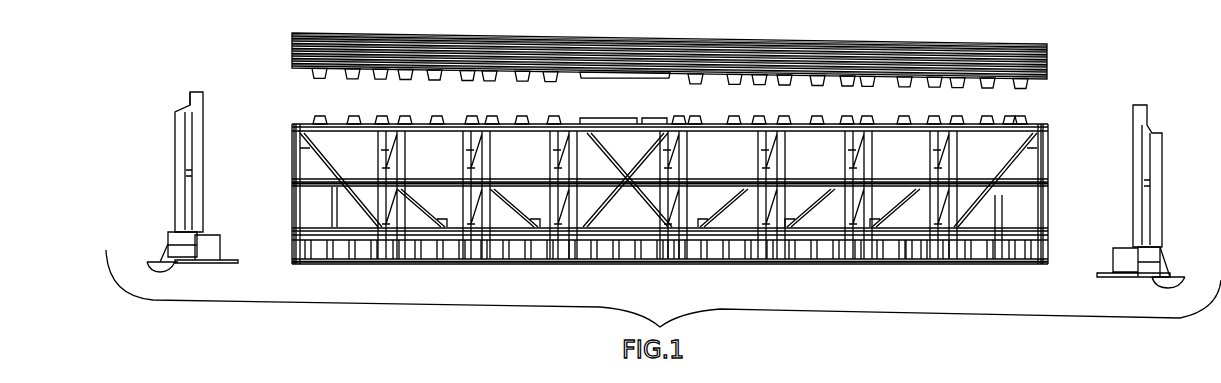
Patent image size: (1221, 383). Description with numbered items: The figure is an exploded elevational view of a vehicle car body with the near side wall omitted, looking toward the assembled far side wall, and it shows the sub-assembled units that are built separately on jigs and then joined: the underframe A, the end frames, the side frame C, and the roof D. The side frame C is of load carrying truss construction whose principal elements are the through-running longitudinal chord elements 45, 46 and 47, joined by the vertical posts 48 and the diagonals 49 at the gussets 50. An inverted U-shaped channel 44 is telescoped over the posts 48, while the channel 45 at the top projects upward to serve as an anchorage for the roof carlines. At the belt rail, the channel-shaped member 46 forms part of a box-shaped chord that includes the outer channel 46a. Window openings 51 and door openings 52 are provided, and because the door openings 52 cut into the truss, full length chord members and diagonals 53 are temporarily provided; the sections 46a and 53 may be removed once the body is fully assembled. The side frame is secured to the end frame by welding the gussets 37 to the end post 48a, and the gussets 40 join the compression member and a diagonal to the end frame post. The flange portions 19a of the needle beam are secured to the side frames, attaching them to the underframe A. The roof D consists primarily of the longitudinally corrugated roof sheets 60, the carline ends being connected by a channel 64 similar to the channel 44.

The roof sheets 60 is at (1027, 46).
The roof D is at (867, 31).
The channel 64 is at (428, 80).
The gussets 37 is at (561, 82).
The chord element 45 is at (339, 121).
The inverted U-shaped channel 44 is at (424, 123).
The window openings 51 is at (903, 157).
The chord element 46 is at (798, 186).
The outer channel 46a is at (650, 181).
The end post 48a is at (292, 212).
The chord element 47 is at (1047, 246).
The diagonals 53 is at (627, 164).
The door openings 52 is at (630, 223).
The vertical posts 48 is at (640, 240).
The diagonals 49 is at (672, 240).
The gussets 50 is at (910, 240).
The gussets 40 is at (442, 265).
The flange portions 19a is at (670, 279).
The underframe A is at (845, 270).
The side frame C is at (285, 180).